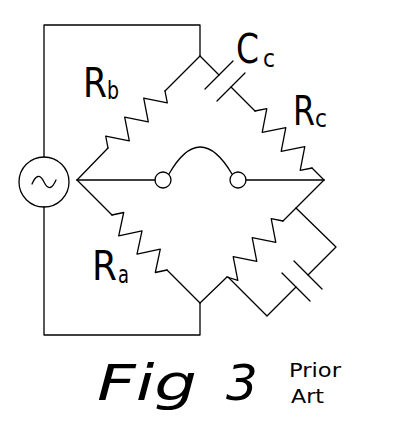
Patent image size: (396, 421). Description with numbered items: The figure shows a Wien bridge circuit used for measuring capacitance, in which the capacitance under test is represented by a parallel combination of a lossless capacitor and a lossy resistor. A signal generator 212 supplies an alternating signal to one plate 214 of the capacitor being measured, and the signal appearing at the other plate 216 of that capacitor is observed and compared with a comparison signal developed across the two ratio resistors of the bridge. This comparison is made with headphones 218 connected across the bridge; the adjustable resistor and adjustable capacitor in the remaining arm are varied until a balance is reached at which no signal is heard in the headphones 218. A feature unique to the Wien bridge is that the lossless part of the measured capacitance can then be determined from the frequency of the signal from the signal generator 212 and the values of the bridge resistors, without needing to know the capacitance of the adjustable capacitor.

The AC signal source 212 is at (48, 157).
The capacitor Cd 214 is at (311, 298).
The parallel resistor-capacitor branch (Rd, Cd) 216 is at (282, 269).
The null detector / switch arc 218 is at (197, 153).